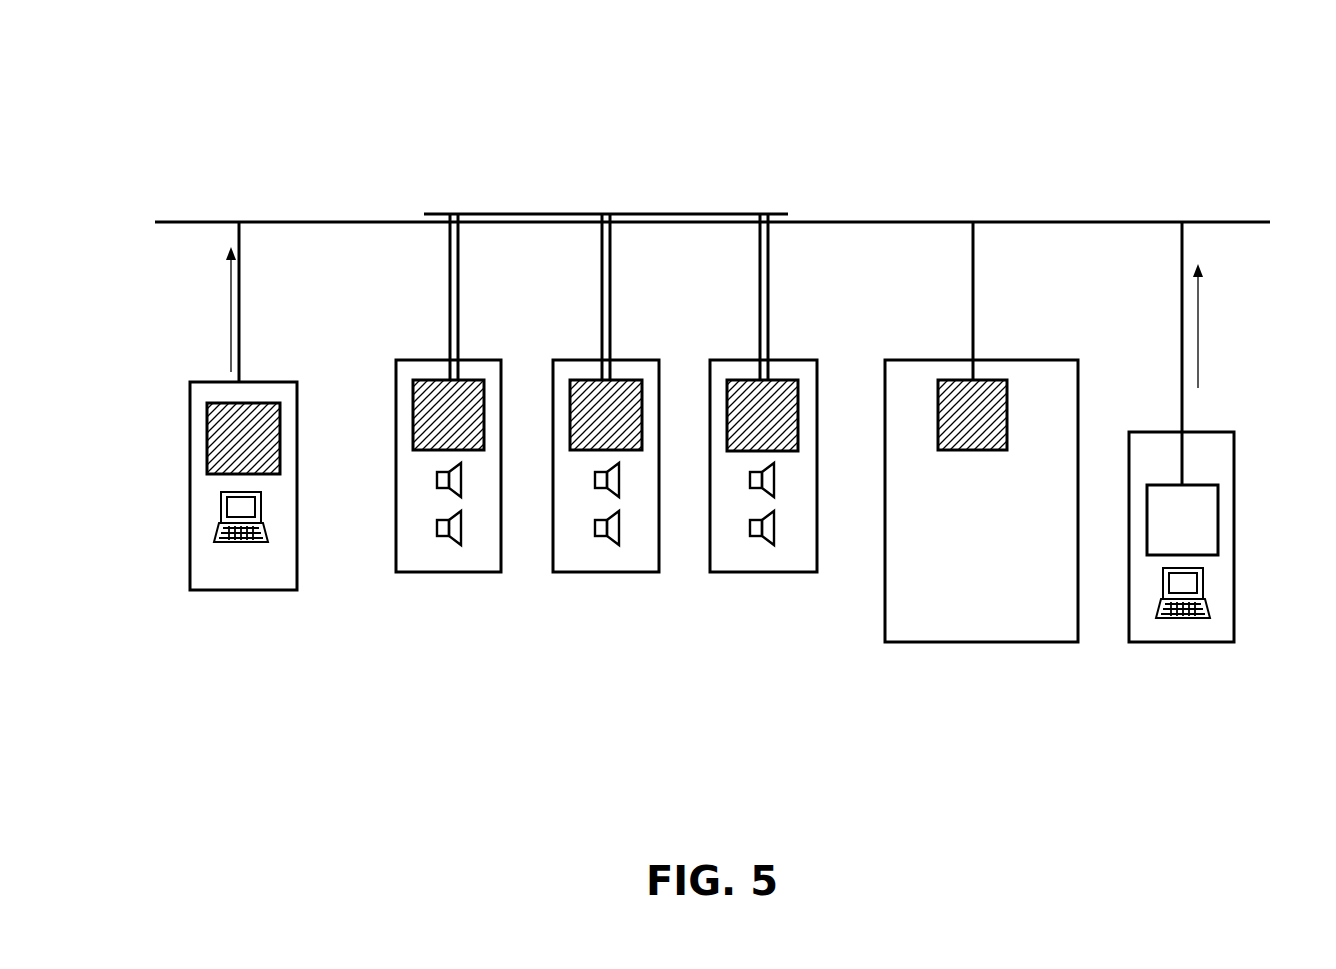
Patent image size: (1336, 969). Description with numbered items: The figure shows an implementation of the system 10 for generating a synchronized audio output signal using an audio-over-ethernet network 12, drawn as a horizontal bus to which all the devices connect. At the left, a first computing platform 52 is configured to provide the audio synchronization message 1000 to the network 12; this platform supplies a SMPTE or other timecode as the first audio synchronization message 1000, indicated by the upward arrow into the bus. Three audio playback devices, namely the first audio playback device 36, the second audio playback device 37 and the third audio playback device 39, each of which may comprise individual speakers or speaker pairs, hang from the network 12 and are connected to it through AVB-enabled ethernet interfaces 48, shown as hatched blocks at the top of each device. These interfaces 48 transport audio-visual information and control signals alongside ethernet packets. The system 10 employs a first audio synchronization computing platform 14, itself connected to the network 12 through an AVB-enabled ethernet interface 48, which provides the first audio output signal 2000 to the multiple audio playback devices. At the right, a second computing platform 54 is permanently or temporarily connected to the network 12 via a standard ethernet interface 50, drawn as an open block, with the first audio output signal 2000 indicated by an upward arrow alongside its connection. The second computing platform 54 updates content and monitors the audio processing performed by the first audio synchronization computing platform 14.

The system 10 is at (322, 74).
The network 12 is at (853, 222).
The first audio synchronization computing platform 14 is at (970, 645).
The first audio playback device 36 is at (448, 575).
The second audio playback device 37 is at (606, 575).
The third audio playback device 39 is at (760, 575).
The AVB-enabled ethernet interface 48 is at (258, 400).
The standard ethernet interface 50 is at (1220, 517).
The first computing platform 52 is at (246, 592).
The second computing platform 54 is at (1180, 645).
The audio synchronization message 1000 is at (230, 330).
The first audio output signal 2000 is at (1198, 347).